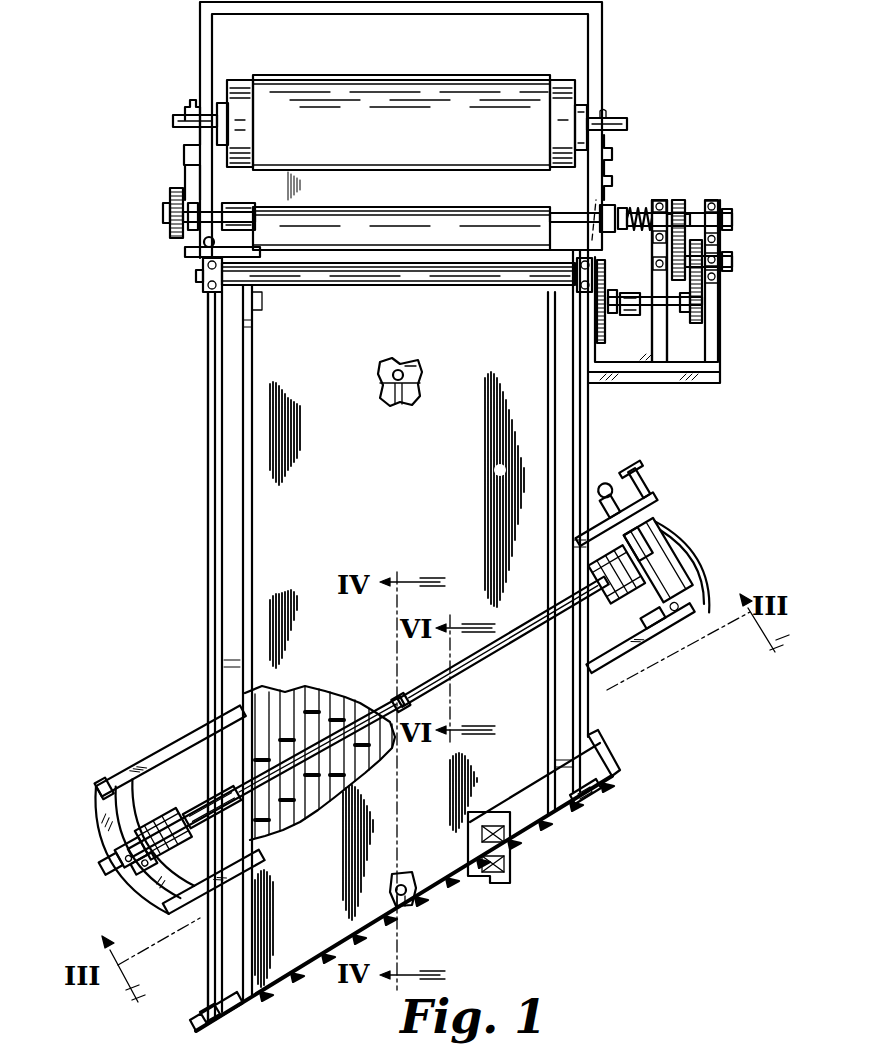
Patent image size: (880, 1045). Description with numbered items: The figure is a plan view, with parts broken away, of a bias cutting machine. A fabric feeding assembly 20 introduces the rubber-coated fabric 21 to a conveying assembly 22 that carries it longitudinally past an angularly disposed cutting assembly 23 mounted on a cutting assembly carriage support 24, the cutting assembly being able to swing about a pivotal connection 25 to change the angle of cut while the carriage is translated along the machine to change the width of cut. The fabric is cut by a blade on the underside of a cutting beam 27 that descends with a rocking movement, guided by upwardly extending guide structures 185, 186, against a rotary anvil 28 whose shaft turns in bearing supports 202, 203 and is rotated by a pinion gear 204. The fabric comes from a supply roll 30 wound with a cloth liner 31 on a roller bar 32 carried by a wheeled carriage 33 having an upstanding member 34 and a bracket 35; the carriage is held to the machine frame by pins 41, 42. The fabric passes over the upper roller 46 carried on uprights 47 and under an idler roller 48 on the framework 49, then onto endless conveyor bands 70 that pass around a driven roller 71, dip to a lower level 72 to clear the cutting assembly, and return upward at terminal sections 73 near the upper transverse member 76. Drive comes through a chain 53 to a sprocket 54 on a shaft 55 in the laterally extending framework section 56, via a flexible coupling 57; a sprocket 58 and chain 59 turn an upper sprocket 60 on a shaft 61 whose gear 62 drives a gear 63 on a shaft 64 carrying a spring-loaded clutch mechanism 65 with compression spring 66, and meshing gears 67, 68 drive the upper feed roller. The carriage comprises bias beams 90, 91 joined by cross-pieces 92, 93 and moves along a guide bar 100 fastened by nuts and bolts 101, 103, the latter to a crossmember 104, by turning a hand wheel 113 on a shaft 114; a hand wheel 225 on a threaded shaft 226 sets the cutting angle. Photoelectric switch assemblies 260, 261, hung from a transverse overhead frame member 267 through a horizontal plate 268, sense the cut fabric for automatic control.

The fabric feeding assembly 20 is at (166, 136).
The fabric 21 is at (384, 95).
The conveying assembly 22 is at (376, 635).
The cutting assembly 23 is at (195, 797).
The cutting assembly carriage support 24 is at (218, 772).
The pivotal connection 25 is at (412, 705).
The cutting beam 27 is at (195, 835).
The rotary anvil 28 is at (385, 705).
The supply roll 30 is at (388, 198).
The cloth liner 31 is at (556, 88).
The roller bar 32 is at (582, 105).
The carriage 33 is at (600, 35).
The upstanding member 34 is at (606, 148).
The bracket 35 is at (612, 112).
The pin 41 is at (600, 230).
The pin 42 is at (203, 247).
The upper roller 46 is at (232, 212).
The uprights 47 is at (195, 175).
The idler roller 48 is at (210, 291).
The framework 49 is at (210, 447).
The chain 53 is at (607, 335).
The sprocket 54 is at (612, 272).
The shaft 55 is at (676, 322).
The laterally extending section of the machine framework 56 is at (694, 311).
The flexible coupling 57 is at (642, 315).
The sprocket 58 is at (706, 308).
The chain 59 is at (705, 292).
The upper sprocket 60 is at (712, 250).
The shaft 61 is at (732, 262).
The gear 62 is at (690, 228).
The gear 63 is at (680, 205).
The shaft 64 is at (728, 215).
The spring-loaded clutch mechanism 65 is at (625, 210).
The compression spring 66 is at (658, 200).
The gear 67 is at (170, 243).
The gear 68 is at (172, 190).
The conveyor bands 70 is at (230, 382).
The driven roller 71 is at (258, 318).
The lower level band portion 72 is at (225, 745).
The terminal band sections 73 is at (262, 826).
The upper transverse member 76 is at (398, 906).
The horizontal supporting beam 90 is at (627, 652).
The horizontal supporting beam 91 is at (115, 790).
The cross-piece 92 is at (113, 826).
The cross-piece 93 is at (680, 572).
The guide bar 100 is at (435, 640).
The nut and bolt 101 is at (398, 894).
The nut and bolt 103 is at (400, 372).
The crossmember 104 is at (416, 378).
The hand wheel 113 is at (652, 483).
The shaft 114 is at (618, 478).
The guide structure 185 is at (148, 820).
The guide structure 186 is at (640, 594).
The bearing support 202 is at (135, 877).
The bearing support 203 is at (672, 537).
The pinion gear 204 is at (130, 866).
The hand wheel 225 is at (700, 618).
The shaft 226 is at (695, 590).
The photoelectric switch assembly 260 is at (528, 842).
The photoelectric switch assembly 261 is at (510, 862).
The transverse overhead frame member 267 is at (566, 820).
The horizontal plate 268 is at (546, 862).